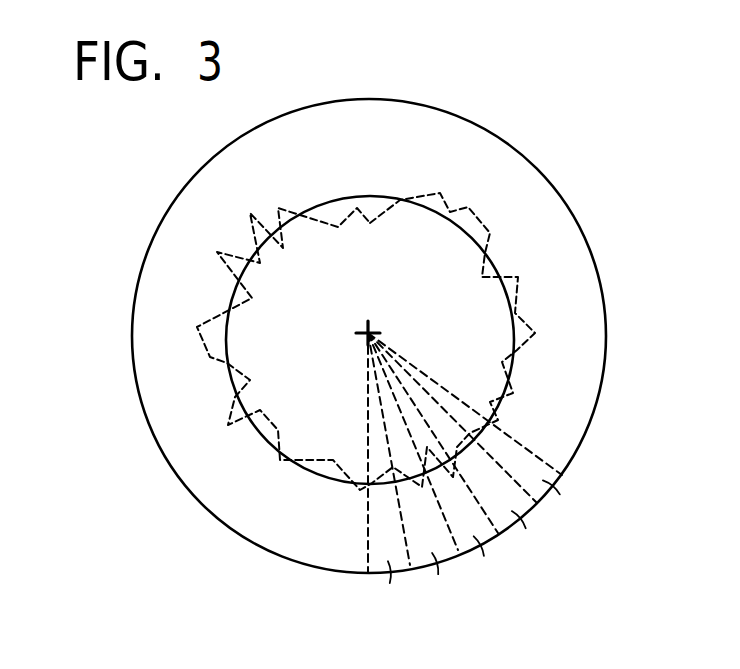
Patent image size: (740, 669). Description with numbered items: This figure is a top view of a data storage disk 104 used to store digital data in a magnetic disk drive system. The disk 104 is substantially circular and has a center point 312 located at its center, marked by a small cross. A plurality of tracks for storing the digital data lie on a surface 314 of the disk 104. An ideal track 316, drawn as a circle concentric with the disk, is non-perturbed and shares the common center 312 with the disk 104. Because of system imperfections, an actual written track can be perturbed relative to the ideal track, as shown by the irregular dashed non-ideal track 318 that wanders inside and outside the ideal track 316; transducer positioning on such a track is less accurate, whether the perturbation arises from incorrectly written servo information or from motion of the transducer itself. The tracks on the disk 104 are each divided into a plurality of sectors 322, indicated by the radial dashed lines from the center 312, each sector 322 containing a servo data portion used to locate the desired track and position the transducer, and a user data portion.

The data storage disk 104 is at (157, 186).
The center point 312 is at (372, 328).
The surface 314 is at (358, 169).
The ideal track 316 is at (512, 374).
The non-ideal track 318 is at (431, 199).
The sectors 322 is at (390, 583).